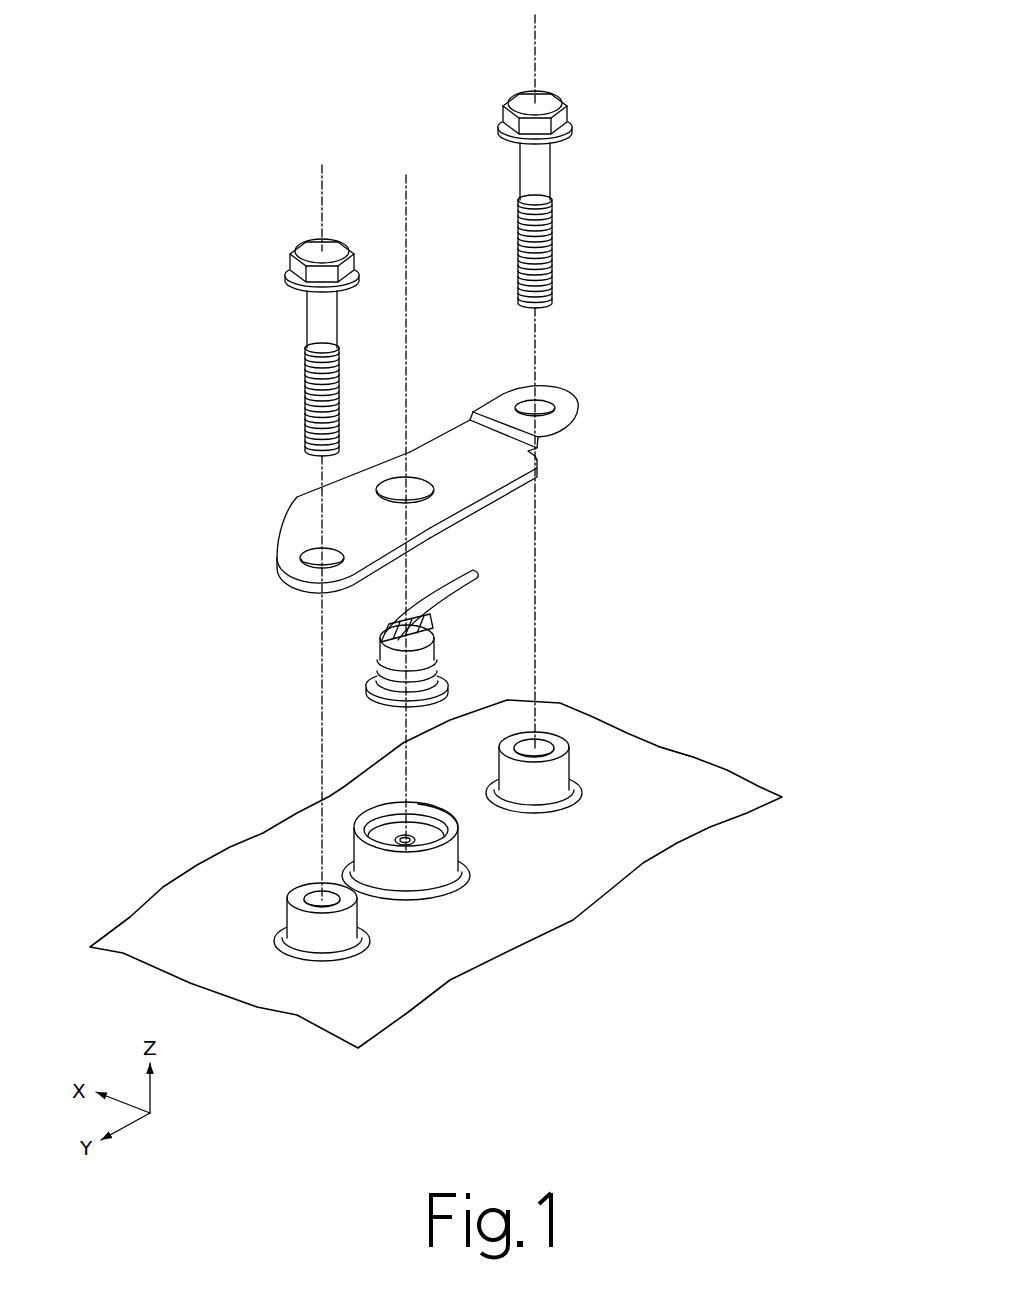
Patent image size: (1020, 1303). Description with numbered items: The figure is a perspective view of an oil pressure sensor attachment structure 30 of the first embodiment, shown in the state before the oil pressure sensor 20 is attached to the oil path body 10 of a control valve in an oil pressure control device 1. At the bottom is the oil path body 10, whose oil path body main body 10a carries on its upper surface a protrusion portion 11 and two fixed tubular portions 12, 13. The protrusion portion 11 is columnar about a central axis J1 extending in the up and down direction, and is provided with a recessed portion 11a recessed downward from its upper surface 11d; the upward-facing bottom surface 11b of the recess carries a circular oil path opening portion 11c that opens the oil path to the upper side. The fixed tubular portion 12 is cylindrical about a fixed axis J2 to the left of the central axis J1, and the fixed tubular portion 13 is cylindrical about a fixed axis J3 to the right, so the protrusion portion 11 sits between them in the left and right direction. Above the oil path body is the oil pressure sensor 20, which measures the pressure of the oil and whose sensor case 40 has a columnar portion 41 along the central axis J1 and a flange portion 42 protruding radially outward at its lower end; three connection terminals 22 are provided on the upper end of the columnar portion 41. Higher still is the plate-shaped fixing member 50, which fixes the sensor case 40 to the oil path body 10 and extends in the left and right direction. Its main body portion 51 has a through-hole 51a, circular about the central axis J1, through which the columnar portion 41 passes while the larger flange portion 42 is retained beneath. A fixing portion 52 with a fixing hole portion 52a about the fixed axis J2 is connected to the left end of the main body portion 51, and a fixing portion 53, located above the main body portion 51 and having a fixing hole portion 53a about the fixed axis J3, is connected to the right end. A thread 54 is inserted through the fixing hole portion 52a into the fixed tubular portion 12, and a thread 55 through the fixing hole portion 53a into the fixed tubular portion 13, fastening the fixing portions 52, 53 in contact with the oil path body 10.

The oil pressure control device 1 is at (740, 81).
The oil path body 10 is at (193, 861).
The oil path body main body 10a is at (670, 812).
The protrusion portion 11 is at (448, 904).
The recessed portion 11a is at (430, 820).
The bottom surface 11b is at (383, 828).
The oil path opening portion 11c is at (406, 850).
The upper surface 11d is at (461, 818).
The fixed tubular portion 12 is at (328, 938).
The fixed tubular portion 13 is at (570, 787).
The oil pressure sensor 20 is at (452, 591).
The connection terminals 22 is at (436, 620).
The oil pressure sensor attachment structure 30 is at (237, 369).
The sensor case 40 is at (369, 644).
The columnar portion 41 is at (432, 629).
The flange portion 42 is at (368, 666).
The fixing member 50 is at (584, 412).
The main body portion 51 is at (445, 439).
The through-hole 51a is at (403, 472).
The fixing portion 52 is at (318, 513).
The fixing hole portion 52a is at (313, 535).
The fixing portion 53 is at (562, 382).
The fixing hole portion 53a is at (547, 400).
The thread 54 is at (293, 268).
The thread 55 is at (568, 118).
The central axis J1 is at (408, 205).
The fixed axis J2 is at (321, 178).
The fixed axis J3 is at (539, 30).